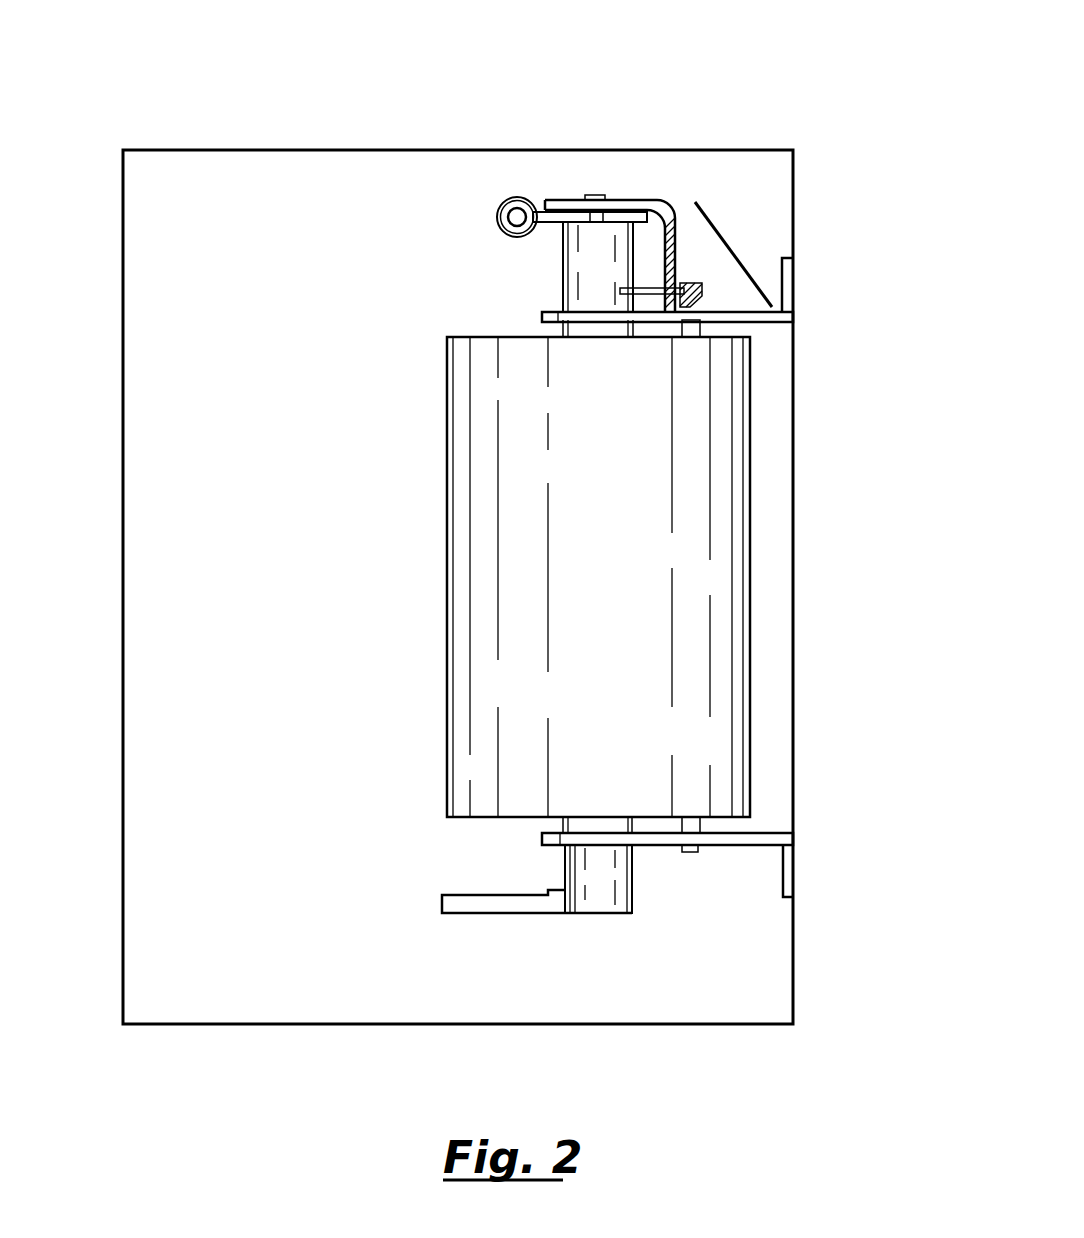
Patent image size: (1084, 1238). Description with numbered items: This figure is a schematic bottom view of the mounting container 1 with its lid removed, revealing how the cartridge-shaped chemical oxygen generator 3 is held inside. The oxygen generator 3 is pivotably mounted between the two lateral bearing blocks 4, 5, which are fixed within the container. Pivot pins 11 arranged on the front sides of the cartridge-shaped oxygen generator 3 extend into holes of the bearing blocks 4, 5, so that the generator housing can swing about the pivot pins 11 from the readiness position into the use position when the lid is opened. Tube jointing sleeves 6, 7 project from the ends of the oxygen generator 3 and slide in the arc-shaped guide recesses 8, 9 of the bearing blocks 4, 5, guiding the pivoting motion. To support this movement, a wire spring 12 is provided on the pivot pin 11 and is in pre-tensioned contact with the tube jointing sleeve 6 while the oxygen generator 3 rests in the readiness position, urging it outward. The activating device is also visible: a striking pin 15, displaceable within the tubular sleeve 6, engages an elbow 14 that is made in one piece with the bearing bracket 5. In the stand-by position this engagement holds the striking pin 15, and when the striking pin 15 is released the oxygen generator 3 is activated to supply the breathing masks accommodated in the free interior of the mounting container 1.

The mounting container 1 is at (458, 512).
The chemical oxygen generator 3 is at (656, 577).
The bearing block 4 is at (656, 857).
The bearing block 5 is at (836, 285).
The tube jointing sleeve 6 is at (523, 275).
The tube jointing sleeve 7 is at (654, 951).
The guide recess 8 is at (603, 301).
The guide recess 9 is at (703, 889).
The pivot pin 11 is at (787, 603).
The wire spring 12 is at (748, 320).
The elbow 14 is at (700, 229).
The striking pin 15 is at (554, 131).